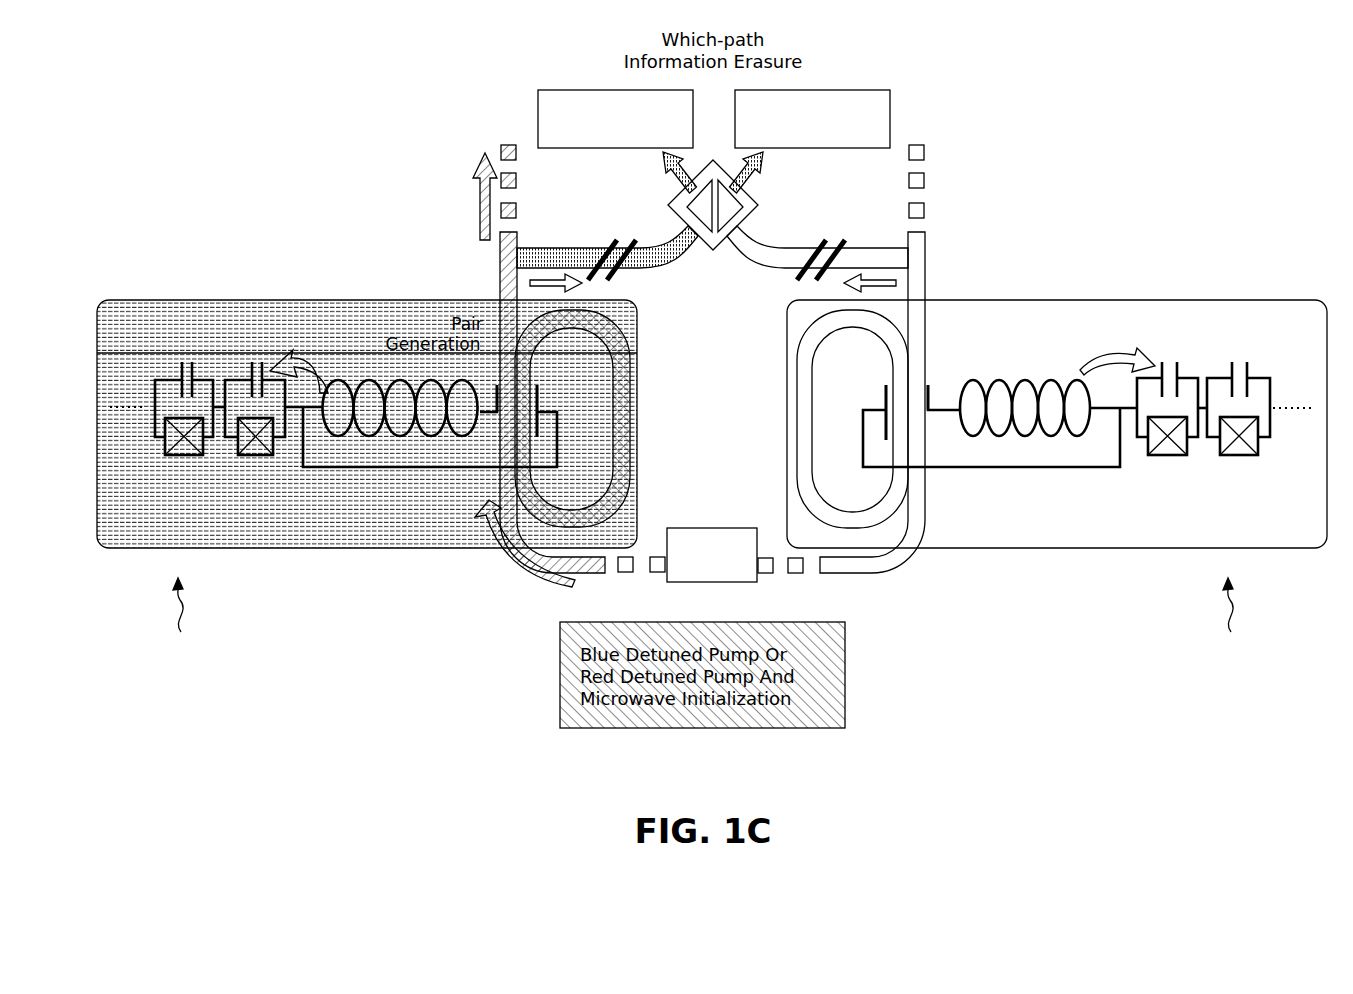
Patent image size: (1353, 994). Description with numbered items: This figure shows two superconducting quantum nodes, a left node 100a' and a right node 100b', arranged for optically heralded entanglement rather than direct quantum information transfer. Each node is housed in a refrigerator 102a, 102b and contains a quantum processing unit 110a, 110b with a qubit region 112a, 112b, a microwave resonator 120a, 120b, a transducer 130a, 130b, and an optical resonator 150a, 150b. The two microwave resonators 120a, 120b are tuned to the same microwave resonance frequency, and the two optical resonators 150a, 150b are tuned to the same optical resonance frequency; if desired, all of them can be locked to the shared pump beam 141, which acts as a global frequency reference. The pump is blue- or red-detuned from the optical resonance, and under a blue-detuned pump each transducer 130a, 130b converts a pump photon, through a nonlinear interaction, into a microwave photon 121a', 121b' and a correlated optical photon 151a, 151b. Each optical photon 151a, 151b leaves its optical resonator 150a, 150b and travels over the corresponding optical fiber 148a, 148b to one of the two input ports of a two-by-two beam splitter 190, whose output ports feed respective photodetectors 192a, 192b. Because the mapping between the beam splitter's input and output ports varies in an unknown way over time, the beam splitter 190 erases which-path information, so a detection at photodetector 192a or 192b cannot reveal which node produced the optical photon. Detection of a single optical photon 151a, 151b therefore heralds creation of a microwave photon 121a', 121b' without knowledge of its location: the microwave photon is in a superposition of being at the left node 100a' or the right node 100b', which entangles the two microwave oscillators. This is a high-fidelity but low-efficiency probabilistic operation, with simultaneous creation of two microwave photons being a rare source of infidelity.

The left node 100a' is at (341, 417).
The right node 100b' is at (1070, 417).
The refrigerator 102a is at (143, 300).
The refrigerator 102b is at (1263, 300).
The quantum processing unit 110a is at (172, 525).
The quantum processing unit 110b is at (1212, 525).
The quantum chip 112a is at (205, 343).
The quantum chip 112b is at (1225, 340).
The microwave resonator 120a is at (397, 440).
The microwave resonator 120b is at (1072, 440).
The microwave photon 121a' is at (301, 360).
The microwave photon 121b' is at (1117, 351).
The transducer 130a is at (492, 440).
The transducer 130b is at (928, 440).
The pump beam 141 is at (518, 590).
The optical fiber 148a is at (607, 251).
The optical fiber 148b is at (817, 251).
The optical resonator 150a is at (603, 418).
The optical resonator 150b is at (815, 419).
The optical photon 151a is at (578, 288).
The optical photon 151b is at (848, 288).
The beam splitter 190 is at (736, 201).
The photodetector 192a is at (585, 134).
The photodetector 192b is at (782, 134).